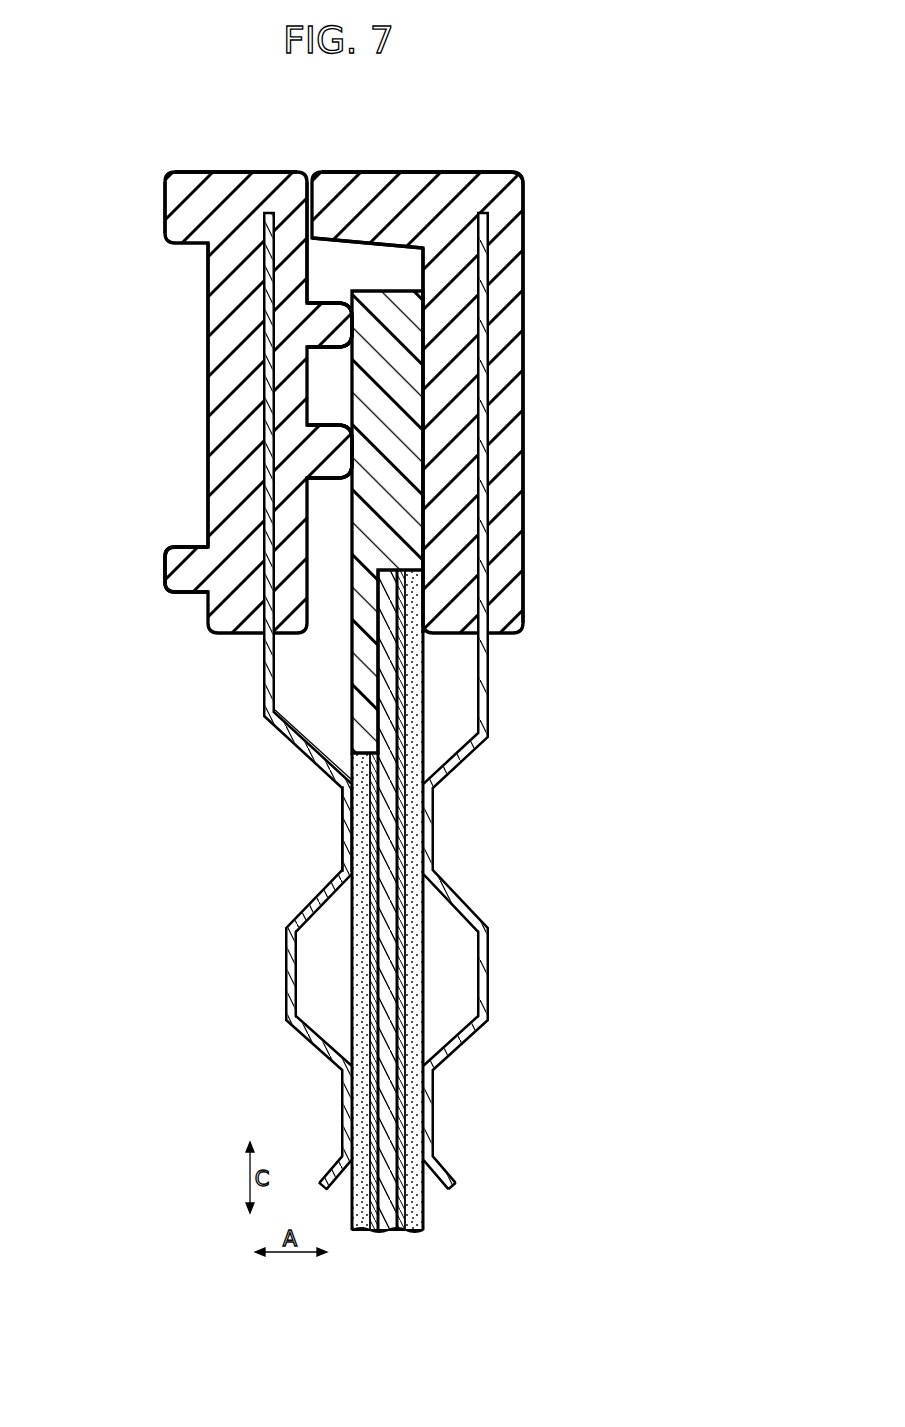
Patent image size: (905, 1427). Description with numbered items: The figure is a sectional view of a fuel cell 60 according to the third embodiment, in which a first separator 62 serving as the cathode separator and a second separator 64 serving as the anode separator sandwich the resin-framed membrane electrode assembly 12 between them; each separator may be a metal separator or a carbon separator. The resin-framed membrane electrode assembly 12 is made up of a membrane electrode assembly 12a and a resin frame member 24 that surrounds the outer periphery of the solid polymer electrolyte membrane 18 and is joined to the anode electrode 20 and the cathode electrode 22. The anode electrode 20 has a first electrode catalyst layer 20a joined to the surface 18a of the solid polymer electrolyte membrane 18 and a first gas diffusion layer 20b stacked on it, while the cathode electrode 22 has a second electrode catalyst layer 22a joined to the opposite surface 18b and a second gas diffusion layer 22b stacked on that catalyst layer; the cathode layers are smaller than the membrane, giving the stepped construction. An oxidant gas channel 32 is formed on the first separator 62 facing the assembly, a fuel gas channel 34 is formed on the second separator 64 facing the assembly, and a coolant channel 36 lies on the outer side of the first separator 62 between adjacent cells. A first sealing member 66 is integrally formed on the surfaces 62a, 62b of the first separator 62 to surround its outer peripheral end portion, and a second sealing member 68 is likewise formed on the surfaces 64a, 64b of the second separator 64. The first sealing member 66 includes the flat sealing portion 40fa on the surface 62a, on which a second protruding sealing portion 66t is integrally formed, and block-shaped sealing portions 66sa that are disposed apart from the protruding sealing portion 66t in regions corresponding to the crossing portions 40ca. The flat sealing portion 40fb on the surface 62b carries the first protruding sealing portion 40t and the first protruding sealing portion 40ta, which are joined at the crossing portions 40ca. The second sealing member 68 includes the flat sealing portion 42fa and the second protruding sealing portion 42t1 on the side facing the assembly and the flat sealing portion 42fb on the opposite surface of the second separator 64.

The fuel cell 60 is at (460, 84).
The first separator 62 is at (235, 155).
The surface of the first separator 62a is at (302, 735).
The surface of the first separator 62b is at (262, 663).
The second separator 64 is at (554, 165).
The surface of the second separator 64a is at (478, 690).
The surface of the second separator 64b is at (490, 668).
The first sealing member 66 is at (281, 170).
The second protruding sealing portion 66t is at (330, 325).
The block-shaped sealing portion 66sa is at (333, 455).
The second sealing member 68 is at (433, 170).
The resin frame member 24 is at (408, 402).
The first protruding sealing portion 40t is at (182, 205).
The flat sealing portion 40fa is at (312, 270).
The flat sealing portion 40fb is at (208, 320).
The first protruding sealing portion 40ta is at (175, 567).
The crossing portion 40ca is at (186, 569).
The second protruding sealing portion 42t1 is at (365, 172).
The flat sealing portion 42fa is at (453, 265).
The flat sealing portion 42fb is at (515, 310).
The coolant channel 36 is at (310, 870).
The oxidant gas channel 32 is at (315, 938).
The fuel gas channel 34 is at (450, 937).
The resin-framed membrane electrode assembly 12 is at (452, 1259).
The membrane electrode assembly 12a is at (550, 1088).
The solid polymer electrolyte membrane 18 is at (390, 1167).
The surface of the solid polymer electrolyte membrane 18a is at (403, 1045).
The surface of the solid polymer electrolyte membrane 18b is at (378, 1033).
The anode electrode 20 is at (512, 1085).
The first electrode catalyst layer 20a is at (398, 1122).
The first gas diffusion layer 20b is at (417, 1100).
The cathode electrode 22 is at (512, 1180).
The second electrode catalyst layer 22a is at (378, 1215).
The second gas diffusion layer 22b is at (365, 1198).